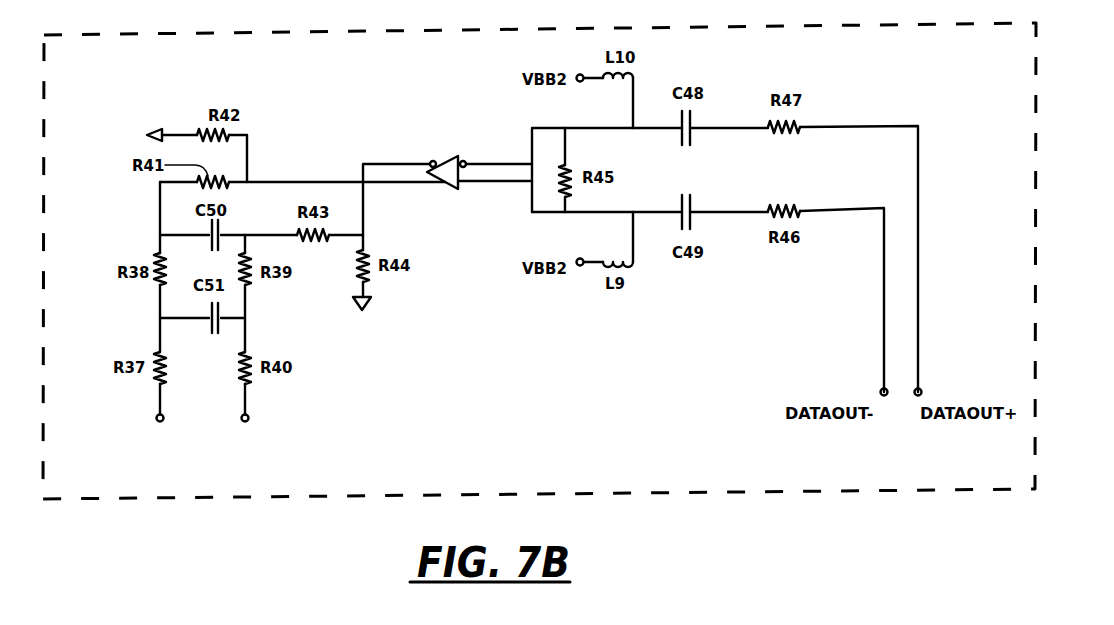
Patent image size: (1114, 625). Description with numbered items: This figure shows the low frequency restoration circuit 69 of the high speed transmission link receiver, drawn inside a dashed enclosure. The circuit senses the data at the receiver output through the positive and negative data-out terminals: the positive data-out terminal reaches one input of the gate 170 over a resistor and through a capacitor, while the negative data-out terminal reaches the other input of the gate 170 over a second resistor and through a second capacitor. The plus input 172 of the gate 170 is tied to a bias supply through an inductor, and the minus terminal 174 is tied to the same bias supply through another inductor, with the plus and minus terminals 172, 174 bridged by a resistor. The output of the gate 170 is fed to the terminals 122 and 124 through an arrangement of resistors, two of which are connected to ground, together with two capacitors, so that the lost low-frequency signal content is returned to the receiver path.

The low frequency restoration circuit 69 is at (1038, 284).
The output terminal 122 is at (156, 417).
The output terminal 124 is at (248, 416).
The gate 170 is at (445, 158).
The plus input 172 is at (488, 163).
The minus terminal 174 is at (488, 182).